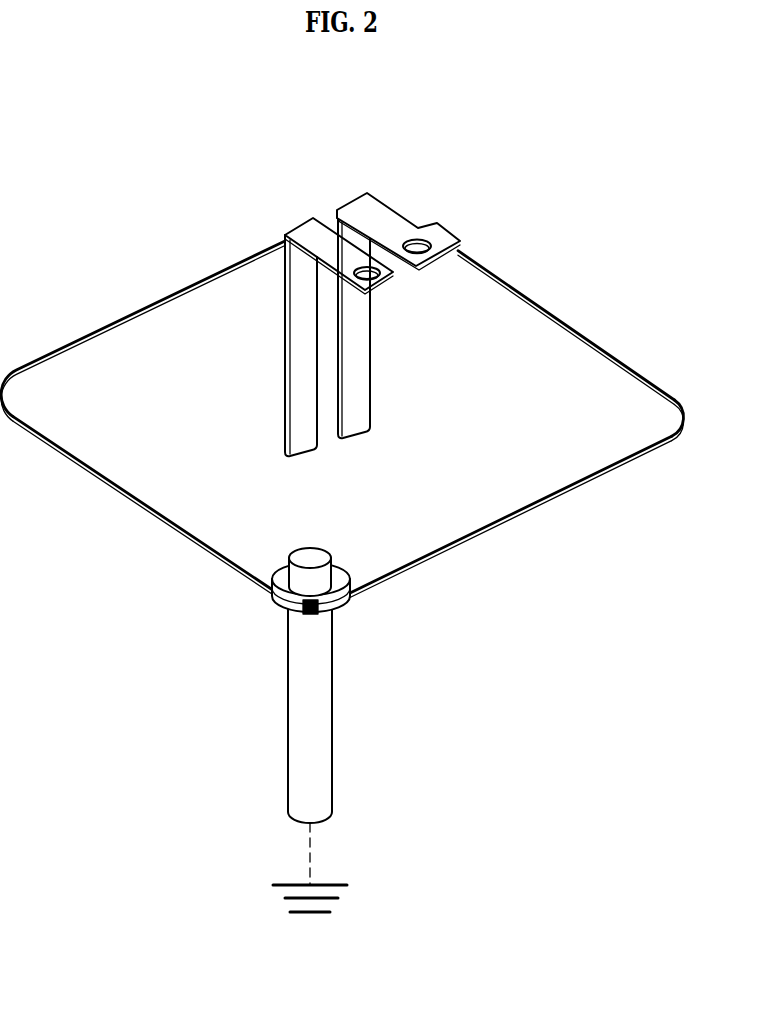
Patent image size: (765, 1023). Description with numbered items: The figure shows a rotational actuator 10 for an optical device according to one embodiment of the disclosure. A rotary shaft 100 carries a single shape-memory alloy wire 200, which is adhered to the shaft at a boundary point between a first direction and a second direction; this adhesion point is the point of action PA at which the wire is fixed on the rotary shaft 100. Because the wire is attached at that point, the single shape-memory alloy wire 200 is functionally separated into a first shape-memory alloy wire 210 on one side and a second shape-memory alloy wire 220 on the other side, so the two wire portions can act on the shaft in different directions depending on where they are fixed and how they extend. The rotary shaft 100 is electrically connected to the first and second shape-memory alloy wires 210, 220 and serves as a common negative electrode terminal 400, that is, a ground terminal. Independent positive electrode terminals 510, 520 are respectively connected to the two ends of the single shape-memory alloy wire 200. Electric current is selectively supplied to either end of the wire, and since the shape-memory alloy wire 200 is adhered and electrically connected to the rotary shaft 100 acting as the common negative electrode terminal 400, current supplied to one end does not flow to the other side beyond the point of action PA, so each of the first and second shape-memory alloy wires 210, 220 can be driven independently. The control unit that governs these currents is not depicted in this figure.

The rotational actuator 10 is at (548, 170).
The rotary shaft 100 is at (272, 699).
The single shape-memory alloy wire 200 is at (107, 607).
The first shape-memory alloy wire 210 is at (543, 308).
The second shape-memory alloy wire 220 is at (157, 519).
The common negative electrode terminal 400 is at (375, 922).
The positive electrode terminal 510 is at (353, 348).
The positive electrode terminal 520 is at (298, 352).
The point of action PA is at (333, 613).